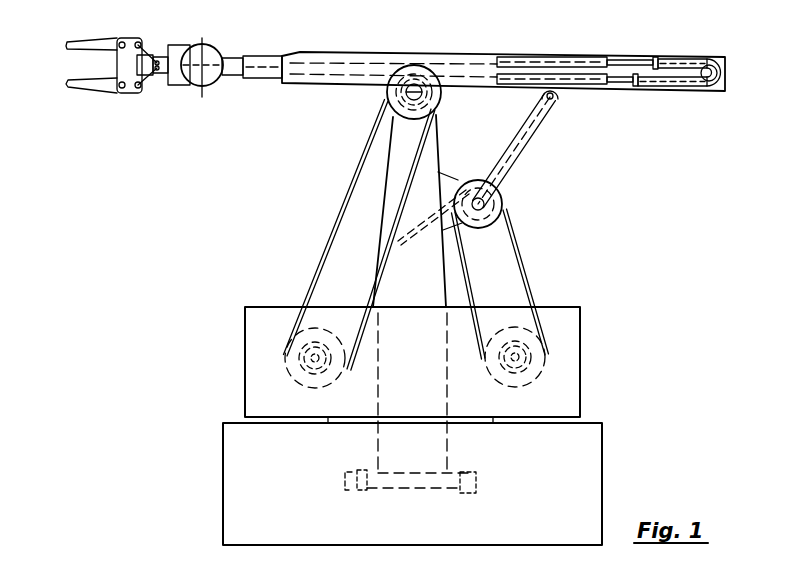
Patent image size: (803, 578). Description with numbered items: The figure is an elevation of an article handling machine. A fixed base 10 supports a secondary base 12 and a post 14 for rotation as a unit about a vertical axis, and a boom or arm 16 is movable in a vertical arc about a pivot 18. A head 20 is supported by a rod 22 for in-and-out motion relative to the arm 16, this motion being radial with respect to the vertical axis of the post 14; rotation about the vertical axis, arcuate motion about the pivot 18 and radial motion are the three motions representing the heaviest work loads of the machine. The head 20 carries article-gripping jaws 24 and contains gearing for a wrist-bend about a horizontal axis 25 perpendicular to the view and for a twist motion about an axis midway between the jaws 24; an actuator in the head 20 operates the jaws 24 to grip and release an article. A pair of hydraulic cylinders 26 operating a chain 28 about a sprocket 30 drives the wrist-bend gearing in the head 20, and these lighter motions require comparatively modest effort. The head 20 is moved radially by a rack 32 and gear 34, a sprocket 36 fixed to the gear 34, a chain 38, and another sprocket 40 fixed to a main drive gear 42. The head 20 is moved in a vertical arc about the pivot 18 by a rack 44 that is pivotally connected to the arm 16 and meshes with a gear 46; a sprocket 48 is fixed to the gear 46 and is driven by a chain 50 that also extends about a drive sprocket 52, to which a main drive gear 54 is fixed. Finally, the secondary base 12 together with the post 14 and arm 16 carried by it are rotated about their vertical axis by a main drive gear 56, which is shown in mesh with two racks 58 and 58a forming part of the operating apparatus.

The fixed base 10 is at (590, 486).
The secondary base 12 is at (573, 388).
The post 14 is at (397, 160).
The arm 16 is at (340, 53).
The pivot 18 is at (422, 92).
The head 20 is at (185, 104).
The rod 22 is at (229, 76).
The article-gripping jaws 24 is at (68, 48).
The horizontal axis 25 is at (213, 60).
The hydraulic cylinders 26 is at (518, 80).
The chain 28 is at (680, 58).
The sprocket 30 is at (717, 73).
The rack 32 is at (368, 62).
The gear 34 is at (396, 93).
The sprocket 36 is at (389, 112).
The chain 38 is at (342, 217).
The sprocket 40 is at (358, 302).
The main drive gear 42 is at (290, 305).
The rack 44 is at (517, 133).
The gear 46 is at (502, 198).
The sprocket 48 is at (463, 180).
The chain 50 is at (525, 270).
The drive sprocket 52 is at (520, 312).
The main drive gear 54 is at (537, 348).
The main drive gear 56 is at (367, 498).
The rack 58 is at (343, 480).
The rack 58a is at (483, 482).